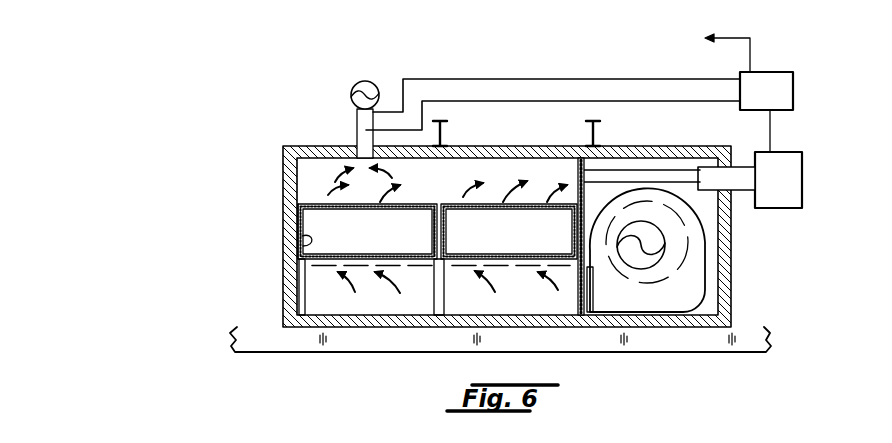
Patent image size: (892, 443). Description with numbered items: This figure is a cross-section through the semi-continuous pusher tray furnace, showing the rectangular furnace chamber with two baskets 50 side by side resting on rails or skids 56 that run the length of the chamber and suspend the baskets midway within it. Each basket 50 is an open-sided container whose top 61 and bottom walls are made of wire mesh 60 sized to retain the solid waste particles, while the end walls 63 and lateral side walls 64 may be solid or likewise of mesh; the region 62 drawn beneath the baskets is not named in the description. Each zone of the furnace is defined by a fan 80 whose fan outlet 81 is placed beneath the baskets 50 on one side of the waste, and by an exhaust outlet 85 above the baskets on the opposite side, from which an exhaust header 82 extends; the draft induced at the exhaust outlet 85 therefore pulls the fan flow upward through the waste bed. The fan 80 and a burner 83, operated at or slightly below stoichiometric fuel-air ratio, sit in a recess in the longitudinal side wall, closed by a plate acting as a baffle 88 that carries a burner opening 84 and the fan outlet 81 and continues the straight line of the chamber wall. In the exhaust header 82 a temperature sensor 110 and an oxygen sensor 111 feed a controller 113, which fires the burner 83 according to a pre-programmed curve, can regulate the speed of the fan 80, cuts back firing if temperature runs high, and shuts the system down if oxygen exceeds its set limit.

The basket 50 is at (489, 194).
The rails or skids 56 is at (297, 222).
The wire mesh 60 is at (400, 204).
The top 61 is at (427, 204).
The lower chamber 62 is at (358, 265).
The end walls 63 is at (300, 248).
The lateral side walls 64 is at (556, 225).
The fan 80 is at (703, 266).
The fan outlet 81 is at (577, 292).
The exhaust header 82 is at (356, 82).
The burner 83 is at (792, 144).
The burner opening 84 is at (577, 177).
The exhaust outlet 85 is at (357, 163).
The baffle 88 is at (585, 192).
The temperature sensor 110 is at (413, 79).
The oxygen sensor 111 is at (477, 100).
The controller 113 is at (795, 88).